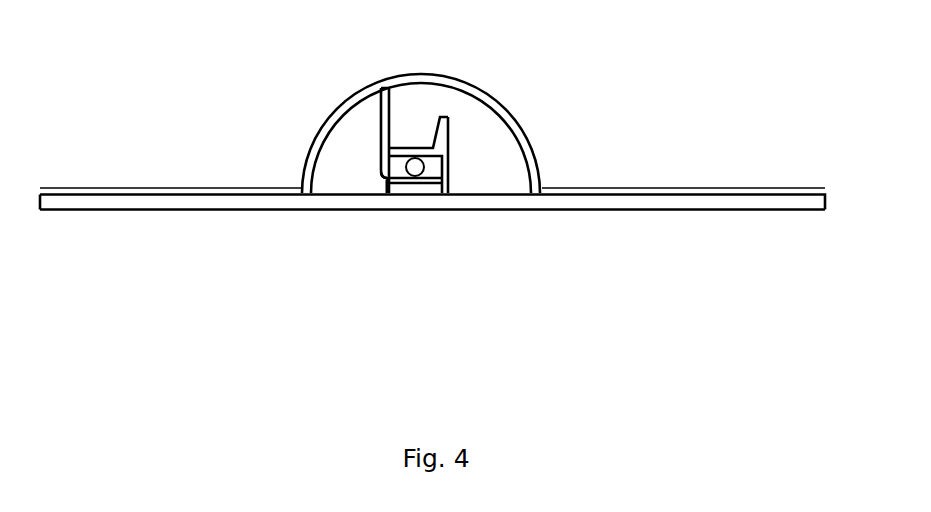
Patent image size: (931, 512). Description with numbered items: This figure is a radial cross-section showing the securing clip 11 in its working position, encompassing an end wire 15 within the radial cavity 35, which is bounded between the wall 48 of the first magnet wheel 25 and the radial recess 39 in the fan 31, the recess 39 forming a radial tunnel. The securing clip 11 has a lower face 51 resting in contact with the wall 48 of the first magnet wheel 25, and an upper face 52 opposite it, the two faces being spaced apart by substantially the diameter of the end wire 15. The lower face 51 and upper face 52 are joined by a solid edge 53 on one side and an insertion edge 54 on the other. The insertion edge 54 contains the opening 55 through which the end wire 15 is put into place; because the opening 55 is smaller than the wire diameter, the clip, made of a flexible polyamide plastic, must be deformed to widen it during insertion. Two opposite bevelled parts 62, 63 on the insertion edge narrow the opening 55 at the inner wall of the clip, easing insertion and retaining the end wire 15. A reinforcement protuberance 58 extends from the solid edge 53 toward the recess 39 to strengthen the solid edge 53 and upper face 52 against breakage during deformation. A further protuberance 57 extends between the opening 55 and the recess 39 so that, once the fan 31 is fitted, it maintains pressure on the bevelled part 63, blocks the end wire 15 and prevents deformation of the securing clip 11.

The securing clip 11 is at (417, 232).
The end wire 15 is at (419, 176).
The first magnet wheel 25 is at (786, 210).
The fan 31 is at (730, 188).
The radial cavity 35 is at (520, 170).
The recess 39 is at (543, 178).
The wall 48 is at (113, 198).
The lower face 51 is at (431, 185).
The upper face 52 is at (414, 150).
The solid edge 53 is at (463, 173).
The insertion edge 54 is at (390, 171).
The opening 55 is at (381, 174).
The protuberance 57 is at (380, 118).
The reinforcement protuberance 58 is at (450, 126).
The bevelled part 62 is at (387, 194).
The bevelled part 63 is at (382, 171).